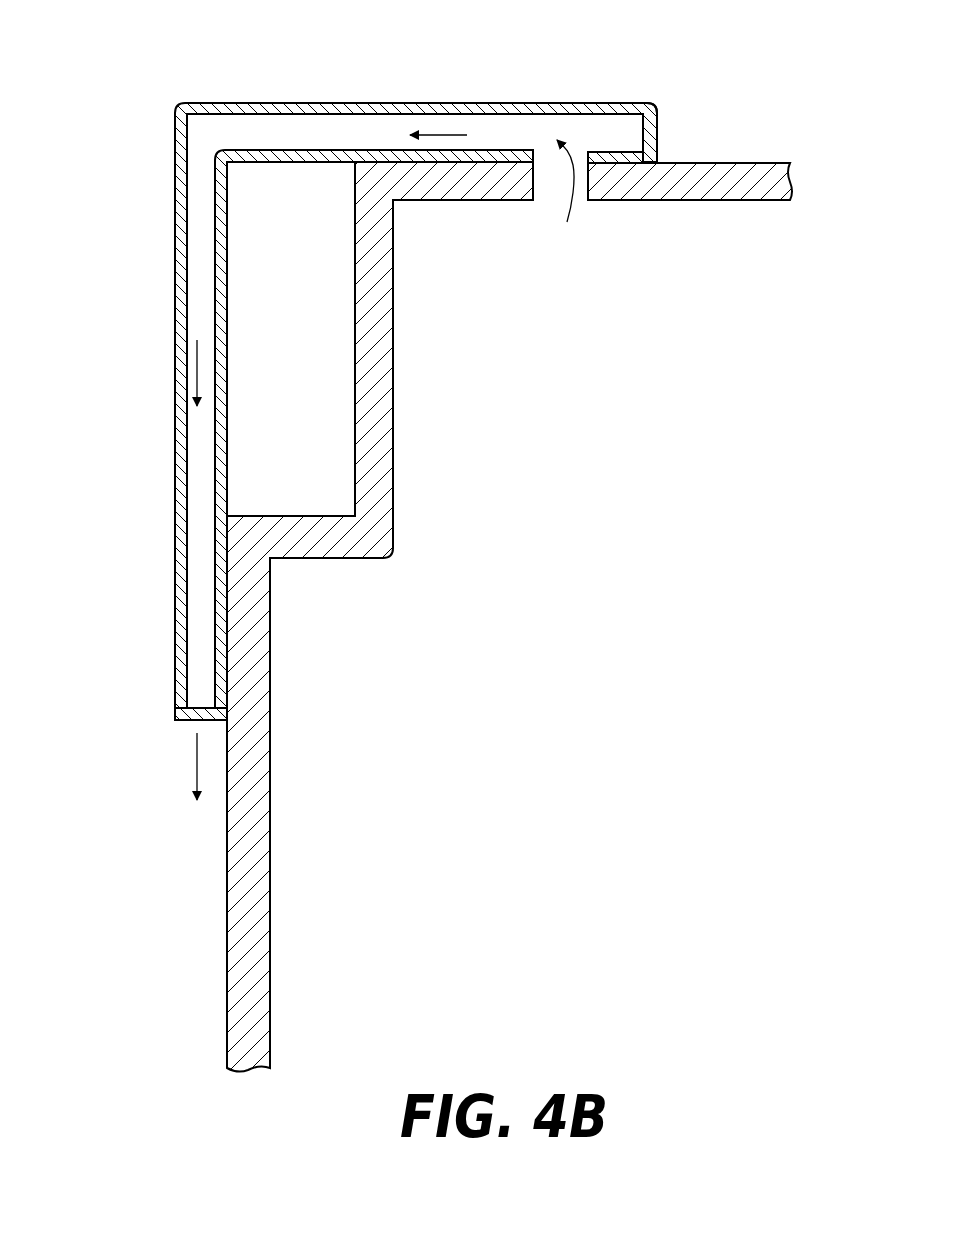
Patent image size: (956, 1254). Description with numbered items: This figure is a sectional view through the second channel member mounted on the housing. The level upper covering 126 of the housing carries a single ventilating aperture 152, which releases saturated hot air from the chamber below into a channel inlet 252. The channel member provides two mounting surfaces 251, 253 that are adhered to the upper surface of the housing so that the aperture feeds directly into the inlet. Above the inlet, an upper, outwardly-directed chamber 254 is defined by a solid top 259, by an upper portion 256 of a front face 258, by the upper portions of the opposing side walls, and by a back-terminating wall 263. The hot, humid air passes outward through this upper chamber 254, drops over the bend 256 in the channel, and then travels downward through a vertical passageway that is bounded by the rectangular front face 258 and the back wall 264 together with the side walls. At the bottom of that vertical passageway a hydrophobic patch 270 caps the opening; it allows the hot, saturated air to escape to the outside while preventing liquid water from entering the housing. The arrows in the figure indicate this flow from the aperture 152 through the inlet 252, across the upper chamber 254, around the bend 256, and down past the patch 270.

The level upper covering 126 is at (755, 163).
The single ventilating aperture 152 is at (548, 194).
The mounting surface 251 is at (618, 162).
The channel inlet 252 is at (578, 198).
The mounting surface 253 is at (472, 170).
The upper, outwardly-directed chamber 254 is at (388, 128).
The upper portion of front face / bend 256 is at (175, 132).
The front face 258 is at (176, 362).
The solid top 259 is at (366, 102).
The back-terminating wall 263 is at (658, 118).
The back wall 264 is at (228, 330).
The hydrophobic patch 270 is at (180, 718).